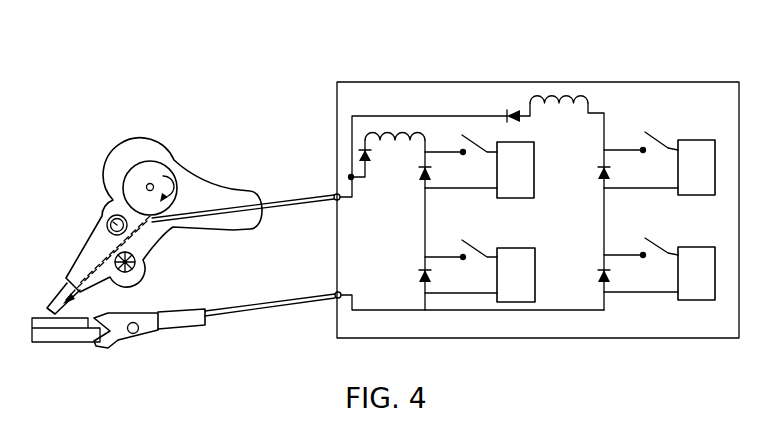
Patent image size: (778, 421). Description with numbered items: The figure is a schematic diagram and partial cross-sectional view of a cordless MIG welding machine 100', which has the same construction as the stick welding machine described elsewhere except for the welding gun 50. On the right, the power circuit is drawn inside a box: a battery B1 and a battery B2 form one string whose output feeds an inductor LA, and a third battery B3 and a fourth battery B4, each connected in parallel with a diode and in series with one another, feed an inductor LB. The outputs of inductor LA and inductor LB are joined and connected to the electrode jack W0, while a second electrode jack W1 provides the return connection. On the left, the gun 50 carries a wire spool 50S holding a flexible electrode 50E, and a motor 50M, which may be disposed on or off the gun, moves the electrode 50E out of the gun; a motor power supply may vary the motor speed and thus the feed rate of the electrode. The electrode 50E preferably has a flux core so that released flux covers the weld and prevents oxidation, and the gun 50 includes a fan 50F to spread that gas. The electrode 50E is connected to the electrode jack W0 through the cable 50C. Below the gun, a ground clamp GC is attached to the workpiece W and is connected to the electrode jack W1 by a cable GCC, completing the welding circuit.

The MIG welding machine 100' is at (546, 178).
The welding gun 50 is at (208, 183).
The wire spool 50S is at (148, 166).
The motor 50M is at (110, 218).
The flexible electrode 50E is at (78, 260).
The fan 50F is at (140, 269).
The cable 50C is at (273, 202).
The electrode jack W0 is at (334, 195).
The electrode jack W1 is at (336, 299).
The workpiece W is at (68, 344).
The ground clamp GC is at (165, 325).
The cable GCC is at (240, 315).
The inductor LA is at (566, 92).
The inductor LB is at (399, 132).
The battery B1 is at (656, 163).
The battery B2 is at (656, 269).
The battery B3 is at (476, 166).
The battery B4 is at (477, 271).